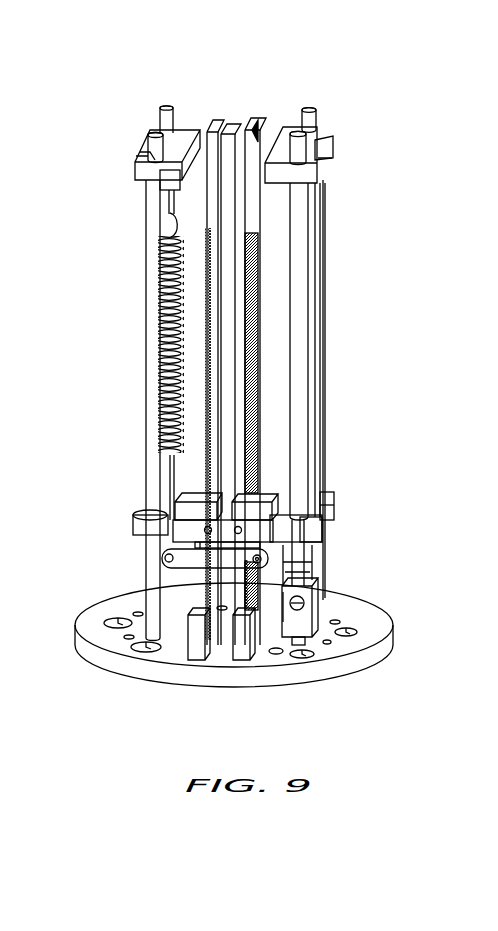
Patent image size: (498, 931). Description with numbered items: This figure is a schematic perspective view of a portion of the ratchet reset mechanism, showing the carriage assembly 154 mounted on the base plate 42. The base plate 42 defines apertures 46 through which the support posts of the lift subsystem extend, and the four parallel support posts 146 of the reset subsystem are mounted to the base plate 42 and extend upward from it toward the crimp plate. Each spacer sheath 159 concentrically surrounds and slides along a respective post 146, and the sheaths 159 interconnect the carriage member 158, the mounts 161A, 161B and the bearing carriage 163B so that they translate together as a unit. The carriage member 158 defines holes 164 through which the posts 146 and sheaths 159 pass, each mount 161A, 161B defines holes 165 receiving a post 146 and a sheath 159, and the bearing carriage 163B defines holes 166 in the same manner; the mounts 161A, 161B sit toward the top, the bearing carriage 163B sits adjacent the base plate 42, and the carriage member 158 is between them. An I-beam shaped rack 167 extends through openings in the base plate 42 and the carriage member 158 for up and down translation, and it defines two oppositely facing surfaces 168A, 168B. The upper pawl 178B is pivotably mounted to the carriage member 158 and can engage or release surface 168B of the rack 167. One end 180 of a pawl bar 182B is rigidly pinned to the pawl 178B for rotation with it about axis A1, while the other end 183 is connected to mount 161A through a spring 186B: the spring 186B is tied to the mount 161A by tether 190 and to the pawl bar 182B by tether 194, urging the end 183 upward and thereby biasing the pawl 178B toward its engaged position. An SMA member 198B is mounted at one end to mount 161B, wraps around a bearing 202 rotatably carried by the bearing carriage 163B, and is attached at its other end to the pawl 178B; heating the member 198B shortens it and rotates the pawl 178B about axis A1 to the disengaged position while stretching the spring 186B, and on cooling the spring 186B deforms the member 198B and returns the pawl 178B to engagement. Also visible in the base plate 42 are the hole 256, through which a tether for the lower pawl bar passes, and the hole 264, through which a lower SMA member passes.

The base plate 42 is at (375, 622).
The apertures 46 is at (130, 642).
The support posts 146 is at (157, 131).
The carriage assembly 154 is at (390, 502).
The carriage member 158 is at (333, 502).
The spacer sheaths 159 is at (150, 212).
The mount 161A is at (145, 152).
The mount 161B is at (330, 138).
The bearing carriage 163B is at (312, 626).
The holes 164 is at (140, 510).
The holes 165 is at (142, 160).
The holes 166 is at (330, 580).
The rack 167 is at (228, 138).
The surface 168A is at (205, 267).
The surface 168B is at (260, 268).
The upper pawl 178B is at (245, 650).
The end of pawl bar 180 is at (275, 570).
The pawl bar 182B is at (212, 558).
The end of pawl bar 183 is at (162, 562).
The spring 186B is at (160, 380).
The tether 190 is at (165, 185).
The tether 194 is at (168, 527).
The SMA member 198B is at (323, 343).
The bearing 202 is at (315, 590).
The hole 256 is at (274, 655).
The hole 264 is at (108, 620).
The axis A1 is at (283, 590).